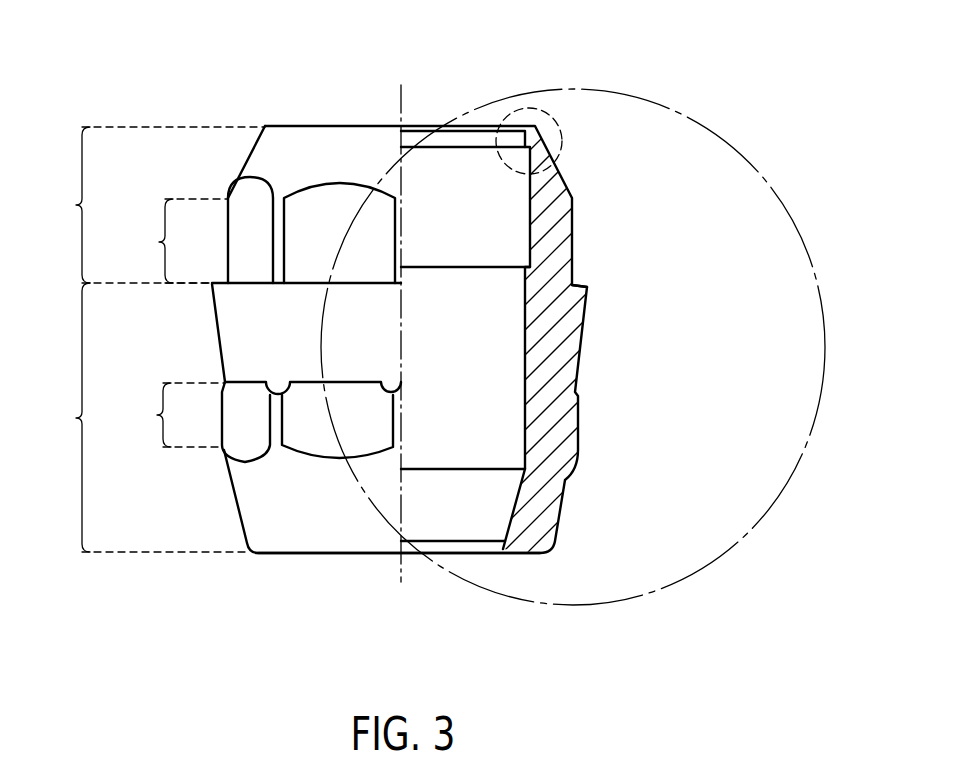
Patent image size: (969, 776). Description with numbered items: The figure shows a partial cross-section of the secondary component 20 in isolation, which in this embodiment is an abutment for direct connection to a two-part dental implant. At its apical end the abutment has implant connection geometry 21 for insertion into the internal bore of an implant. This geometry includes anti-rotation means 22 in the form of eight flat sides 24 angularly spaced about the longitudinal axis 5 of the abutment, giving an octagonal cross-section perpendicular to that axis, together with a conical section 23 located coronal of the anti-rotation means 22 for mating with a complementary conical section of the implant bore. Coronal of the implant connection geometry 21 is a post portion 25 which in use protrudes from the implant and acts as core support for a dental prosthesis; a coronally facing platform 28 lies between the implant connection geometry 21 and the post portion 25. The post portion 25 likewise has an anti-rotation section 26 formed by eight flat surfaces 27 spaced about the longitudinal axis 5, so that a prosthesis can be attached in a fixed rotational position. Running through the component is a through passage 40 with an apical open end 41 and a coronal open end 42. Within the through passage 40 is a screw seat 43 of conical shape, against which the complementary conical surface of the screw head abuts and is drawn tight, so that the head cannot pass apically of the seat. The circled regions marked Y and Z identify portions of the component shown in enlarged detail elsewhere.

The longitudinal axis 5 is at (399, 107).
The secondary component 20 is at (578, 433).
The implant connection geometry 21 is at (147, 417).
The anti-rotation means 22 is at (175, 415).
The conical section 23 is at (212, 335).
The flat sides 24 is at (263, 436).
The post portion 25 is at (154, 205).
The anti-rotation section 26 is at (178, 241).
The flat surfaces 27 is at (263, 256).
The coronally facing platform 28 is at (588, 283).
The through passage 40 is at (458, 168).
The apical open end 41 is at (483, 553).
The coronal open end 42 is at (533, 134).
The screw seat 43 is at (540, 508).
The detail region Y is at (667, 103).
The detail region Z is at (562, 142).